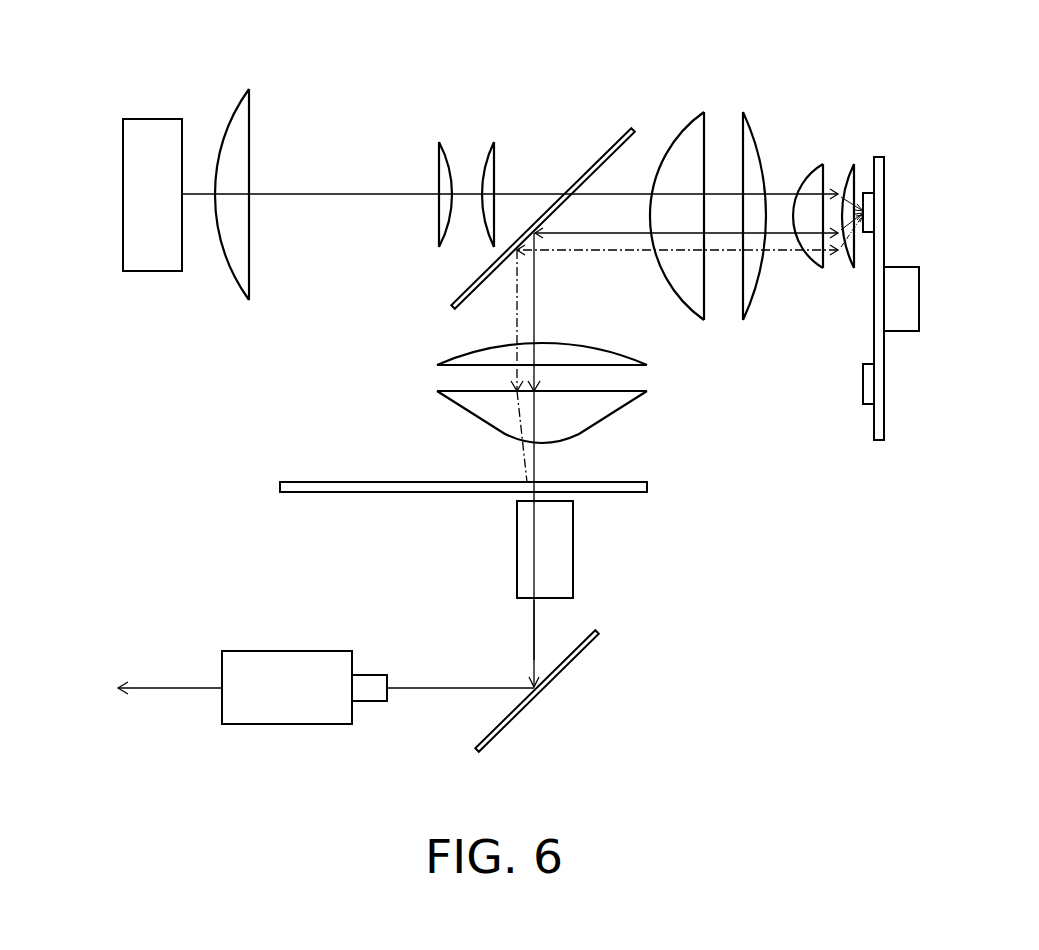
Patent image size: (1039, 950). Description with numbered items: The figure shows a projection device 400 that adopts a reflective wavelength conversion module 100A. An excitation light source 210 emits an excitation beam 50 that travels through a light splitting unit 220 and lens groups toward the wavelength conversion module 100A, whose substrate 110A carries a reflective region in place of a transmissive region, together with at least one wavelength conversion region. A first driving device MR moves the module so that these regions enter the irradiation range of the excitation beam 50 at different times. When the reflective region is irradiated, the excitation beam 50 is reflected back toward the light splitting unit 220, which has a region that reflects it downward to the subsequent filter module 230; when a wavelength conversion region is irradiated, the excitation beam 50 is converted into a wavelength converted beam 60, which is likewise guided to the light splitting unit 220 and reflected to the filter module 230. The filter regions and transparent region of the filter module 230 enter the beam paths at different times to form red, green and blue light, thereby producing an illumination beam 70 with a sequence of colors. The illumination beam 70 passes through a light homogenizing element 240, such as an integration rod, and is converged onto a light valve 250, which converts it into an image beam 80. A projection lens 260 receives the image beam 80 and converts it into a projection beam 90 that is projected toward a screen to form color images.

The excitation light source 210 is at (152, 118).
The excitation beam 50 is at (366, 193).
The wavelength converted beam 60 is at (611, 252).
The light splitting unit 220 is at (541, 216).
The filter module 230 is at (280, 487).
The light homogenizing element 240 is at (575, 548).
The illumination beam 70 is at (532, 630).
The light valve 250 is at (523, 713).
The image beam 80 is at (432, 690).
The projection lens 260 is at (286, 725).
The projection beam 90 is at (175, 690).
The wavelength conversion module 100A is at (832, 394).
The substrate 110A is at (878, 441).
The first driving device MR is at (912, 297).
The projection device 400 is at (1018, 792).